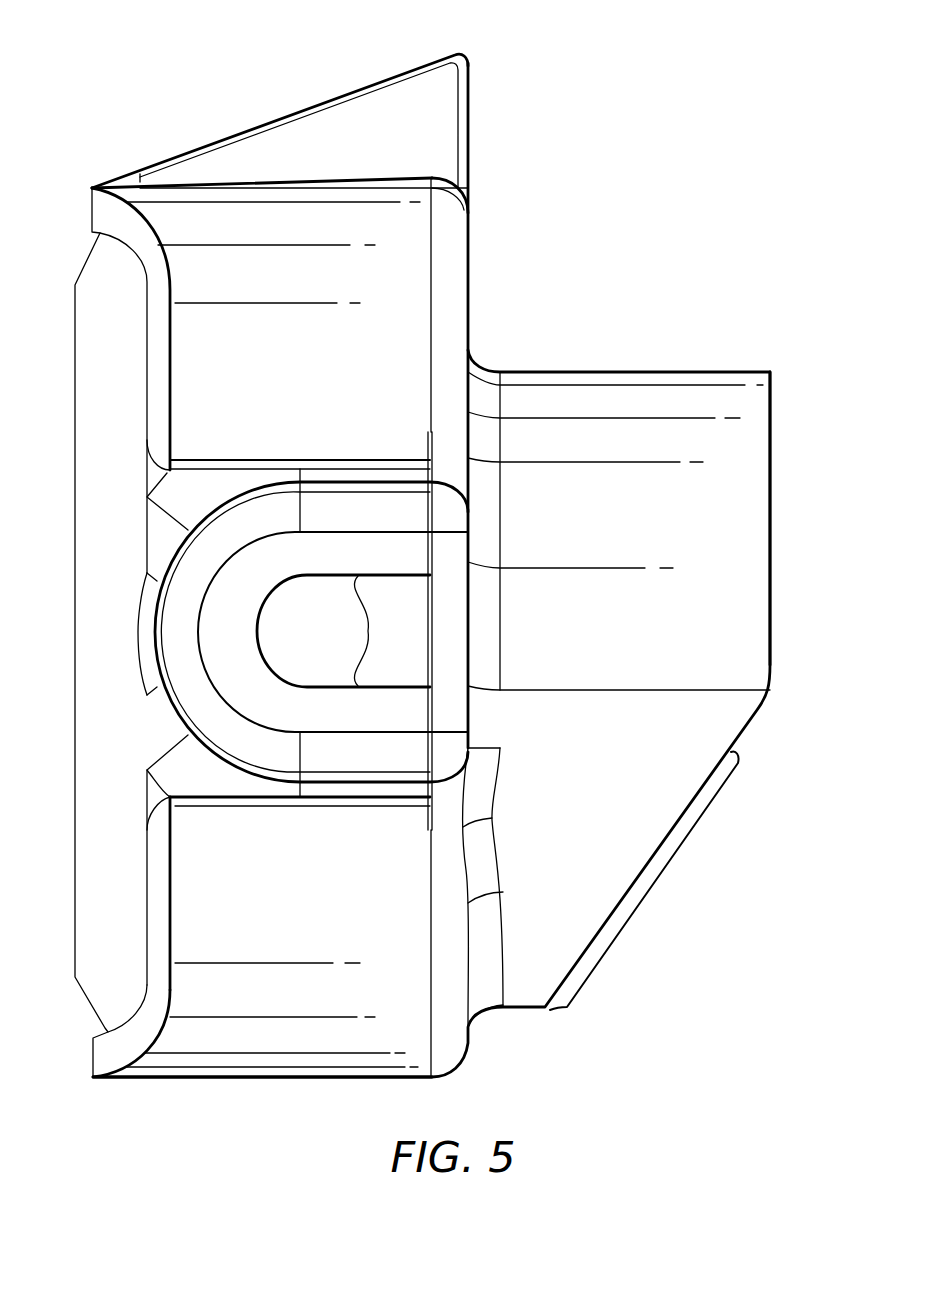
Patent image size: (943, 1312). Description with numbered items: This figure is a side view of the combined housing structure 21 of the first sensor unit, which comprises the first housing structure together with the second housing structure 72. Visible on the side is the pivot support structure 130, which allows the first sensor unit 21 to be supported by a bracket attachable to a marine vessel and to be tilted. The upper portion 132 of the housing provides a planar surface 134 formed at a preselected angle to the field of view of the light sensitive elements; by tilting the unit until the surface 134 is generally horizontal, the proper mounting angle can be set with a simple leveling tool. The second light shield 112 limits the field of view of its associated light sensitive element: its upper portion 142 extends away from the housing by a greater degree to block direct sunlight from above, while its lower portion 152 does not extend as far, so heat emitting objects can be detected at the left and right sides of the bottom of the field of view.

The combined housing structure 21 is at (620, 212).
The second housing structure 72 is at (270, 1070).
The second light shield 112 is at (682, 385).
The pivot support structure 130 is at (290, 642).
The upper portion 132 is at (260, 133).
The planar surface 134 is at (392, 78).
The upper portion of second light shield 142 is at (788, 372).
The lower portion of second light shield 152 is at (663, 873).